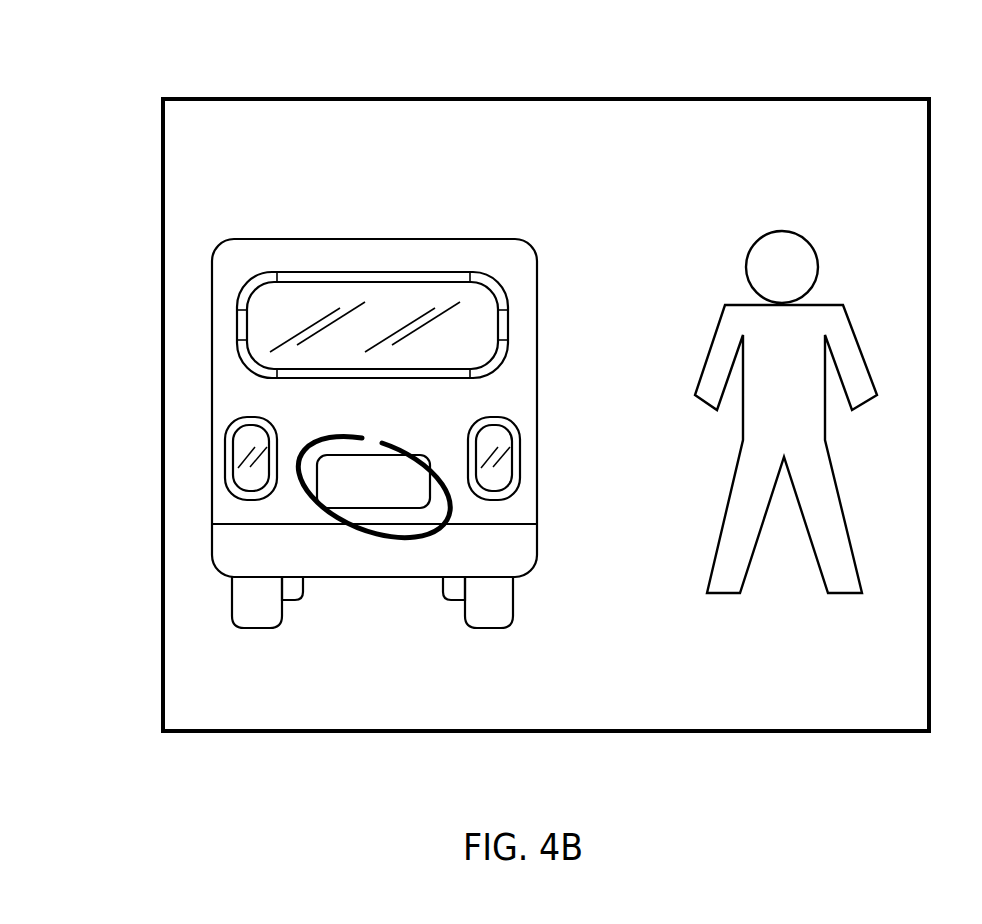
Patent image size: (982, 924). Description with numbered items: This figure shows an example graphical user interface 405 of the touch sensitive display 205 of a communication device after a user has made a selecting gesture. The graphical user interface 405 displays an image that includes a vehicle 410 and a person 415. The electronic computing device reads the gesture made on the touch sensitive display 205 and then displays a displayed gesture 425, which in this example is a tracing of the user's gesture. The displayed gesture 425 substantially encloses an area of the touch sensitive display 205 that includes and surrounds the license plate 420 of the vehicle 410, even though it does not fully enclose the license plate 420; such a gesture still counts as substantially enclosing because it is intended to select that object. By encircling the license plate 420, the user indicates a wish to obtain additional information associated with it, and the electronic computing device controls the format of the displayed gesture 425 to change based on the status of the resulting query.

The graphical user interface 405 is at (485, 371).
The touch sensitive display 205 is at (163, 413).
The vehicle 410 is at (537, 409).
The person 415 is at (758, 242).
The license plate 420 is at (382, 444).
The displayed gesture 425 is at (343, 517).